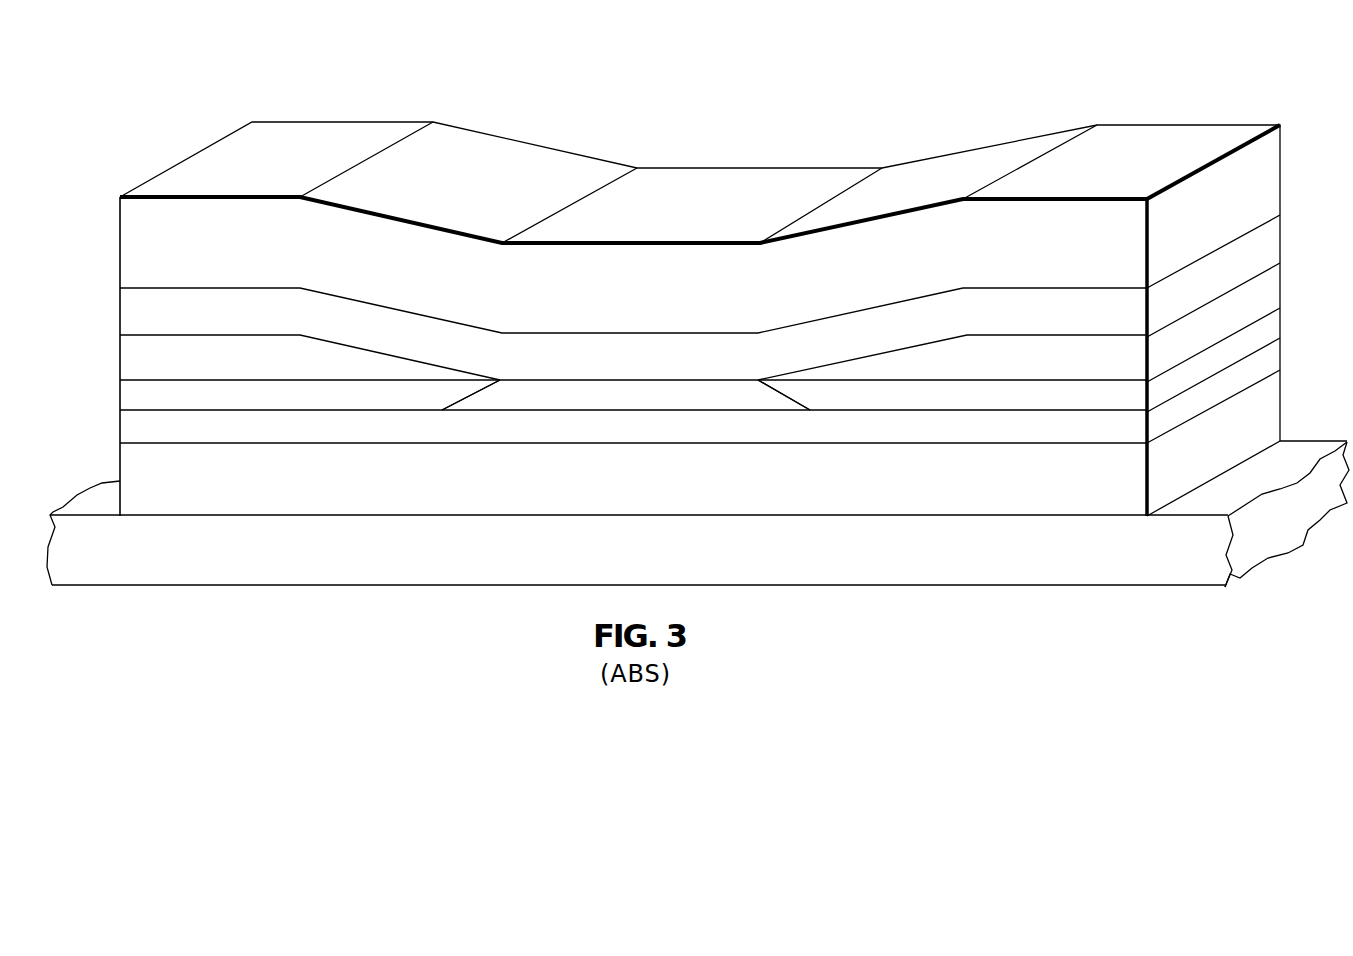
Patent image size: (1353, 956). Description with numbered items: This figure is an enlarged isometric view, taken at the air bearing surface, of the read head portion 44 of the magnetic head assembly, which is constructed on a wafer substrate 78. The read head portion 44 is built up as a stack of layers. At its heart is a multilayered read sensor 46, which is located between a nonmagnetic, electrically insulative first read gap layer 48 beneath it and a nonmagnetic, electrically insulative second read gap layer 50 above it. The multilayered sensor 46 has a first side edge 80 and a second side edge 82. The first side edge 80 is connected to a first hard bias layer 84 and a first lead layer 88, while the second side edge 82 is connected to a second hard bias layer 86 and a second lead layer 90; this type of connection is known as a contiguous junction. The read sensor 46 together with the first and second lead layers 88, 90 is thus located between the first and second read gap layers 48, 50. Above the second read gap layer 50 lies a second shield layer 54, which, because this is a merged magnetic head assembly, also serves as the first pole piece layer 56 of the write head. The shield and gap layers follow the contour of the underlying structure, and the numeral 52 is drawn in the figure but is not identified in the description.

The read head portion 44 is at (762, 137).
The multilayered read sensor 46 is at (536, 381).
The first read gap layer 48 is at (470, 428).
The second read gap layer 50 is at (357, 313).
The first shield layer 52 is at (235, 490).
The second shield layer 54 is at (259, 233).
The first pole piece layer 56 is at (633, 310).
The wafer substrate 78 is at (430, 552).
The first side edge 80 is at (467, 398).
The second side edge 82 is at (793, 398).
The first hard bias layer 84 is at (150, 395).
The second hard bias layer 86 is at (1082, 402).
The first lead layer 88 is at (150, 353).
The second lead layer 90 is at (1087, 360).